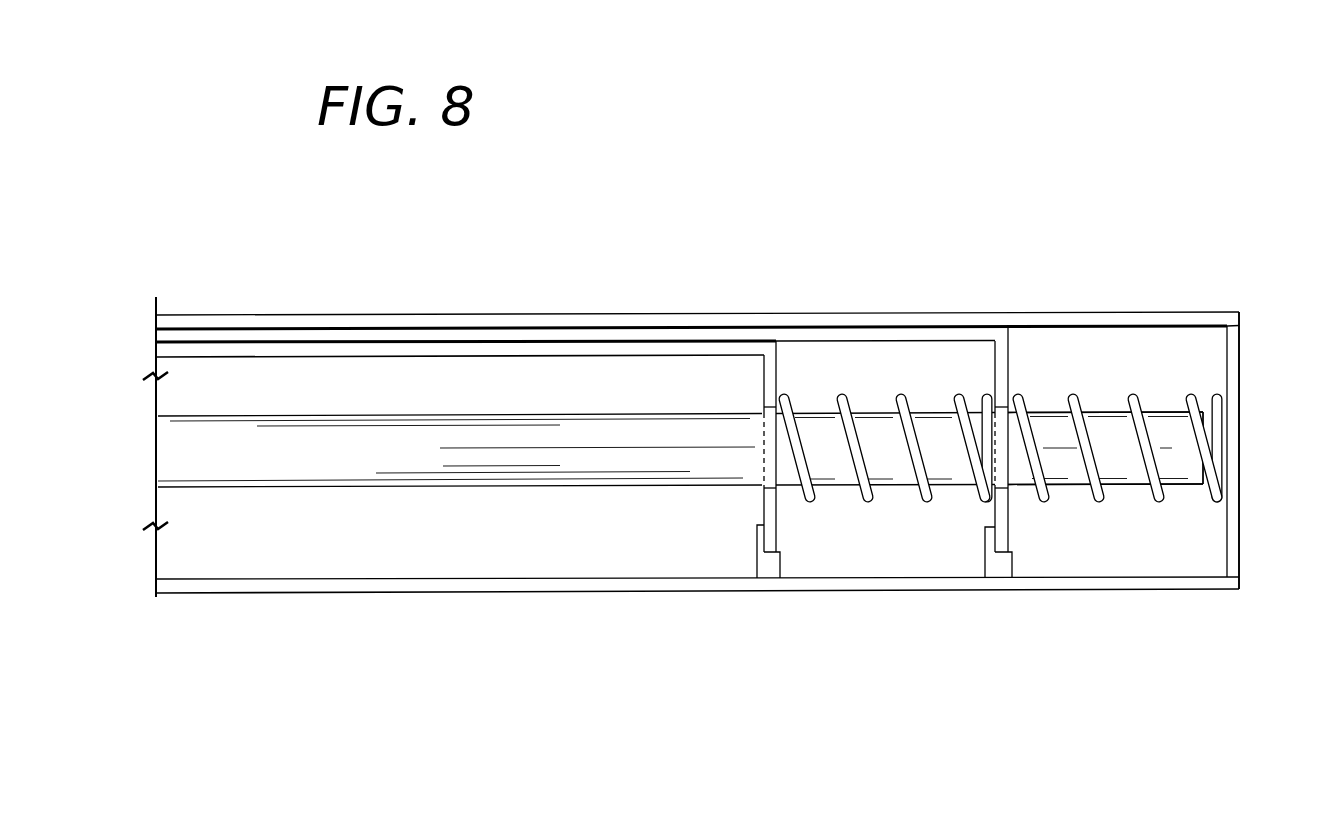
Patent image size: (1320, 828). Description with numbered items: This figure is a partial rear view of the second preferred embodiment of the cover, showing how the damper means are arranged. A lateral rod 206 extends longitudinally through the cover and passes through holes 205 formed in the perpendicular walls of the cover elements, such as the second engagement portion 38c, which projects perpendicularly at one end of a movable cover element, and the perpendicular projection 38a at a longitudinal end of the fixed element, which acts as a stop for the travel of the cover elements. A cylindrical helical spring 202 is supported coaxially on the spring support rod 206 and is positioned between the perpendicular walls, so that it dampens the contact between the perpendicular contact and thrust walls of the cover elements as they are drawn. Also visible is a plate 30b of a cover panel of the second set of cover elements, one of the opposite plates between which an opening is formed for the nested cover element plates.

The second engagement portion 38c is at (768, 378).
The plate 30b is at (1002, 375).
The holes 205 is at (1010, 397).
The cylindrical helical spring 202 is at (1085, 393).
The perpendicular projection 38a is at (1230, 355).
The lateral rod 206 is at (935, 448).